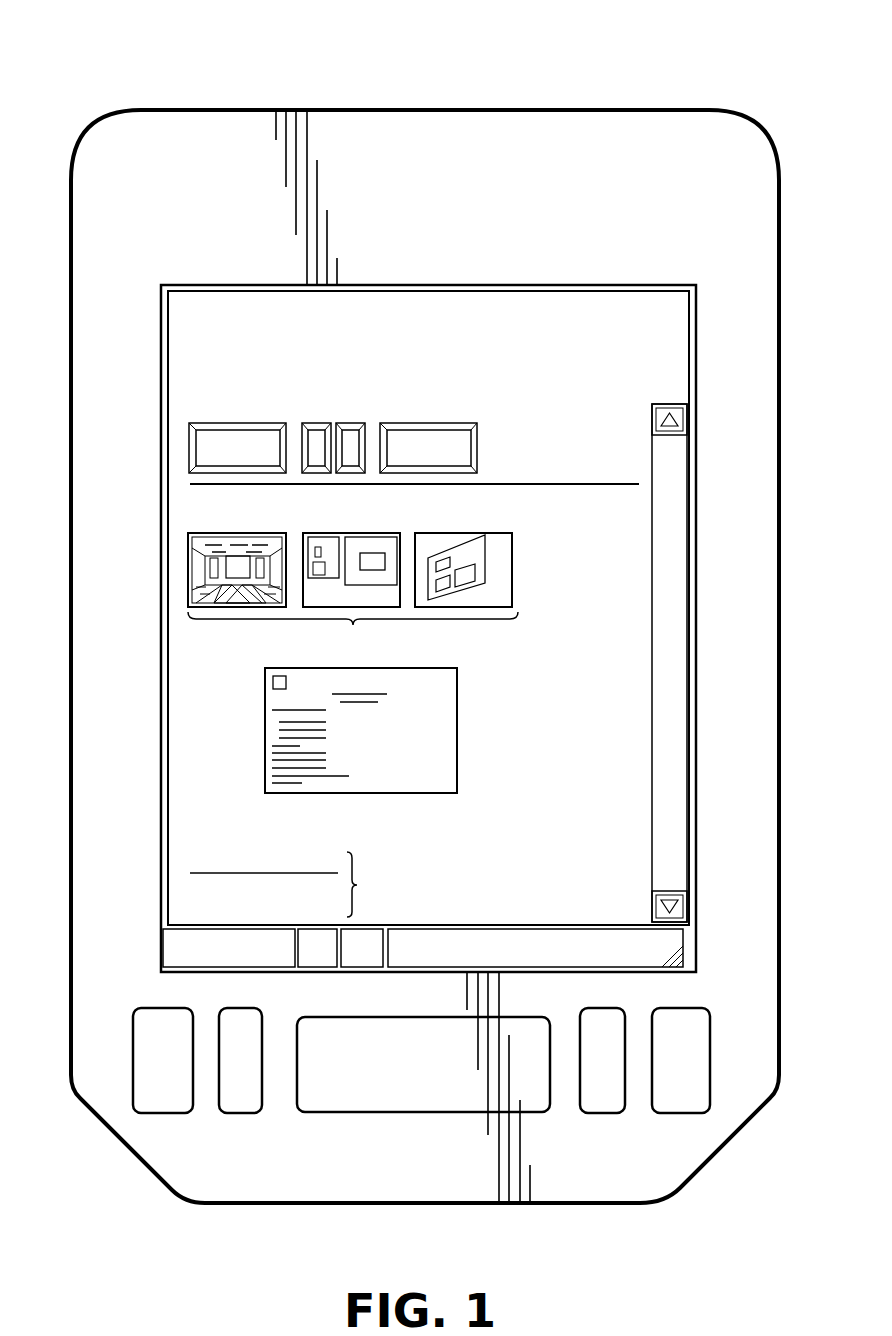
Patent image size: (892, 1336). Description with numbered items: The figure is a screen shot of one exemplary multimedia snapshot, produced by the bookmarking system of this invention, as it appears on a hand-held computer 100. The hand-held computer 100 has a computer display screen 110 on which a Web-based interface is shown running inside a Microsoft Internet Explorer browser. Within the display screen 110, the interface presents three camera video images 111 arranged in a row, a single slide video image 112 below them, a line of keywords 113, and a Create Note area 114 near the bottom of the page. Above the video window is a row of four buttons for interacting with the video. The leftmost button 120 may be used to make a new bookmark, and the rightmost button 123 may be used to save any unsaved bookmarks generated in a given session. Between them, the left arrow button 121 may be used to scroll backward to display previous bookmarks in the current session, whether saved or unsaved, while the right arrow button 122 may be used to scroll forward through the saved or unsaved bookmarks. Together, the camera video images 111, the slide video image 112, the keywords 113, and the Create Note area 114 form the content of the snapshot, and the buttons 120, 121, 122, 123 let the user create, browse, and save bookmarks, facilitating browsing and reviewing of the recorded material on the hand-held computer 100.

The hand-held computer 100 is at (486, 72).
The computer display screen 110 is at (148, 599).
The camera video images 111 is at (353, 579).
The slide video image 112 is at (457, 726).
The keywords 113 is at (190, 822).
The Create Note area 114 is at (357, 885).
The leftmost button 120 is at (236, 422).
The left arrow button 121 is at (316, 422).
The right arrow button 122 is at (352, 422).
The rightmost button 123 is at (435, 422).